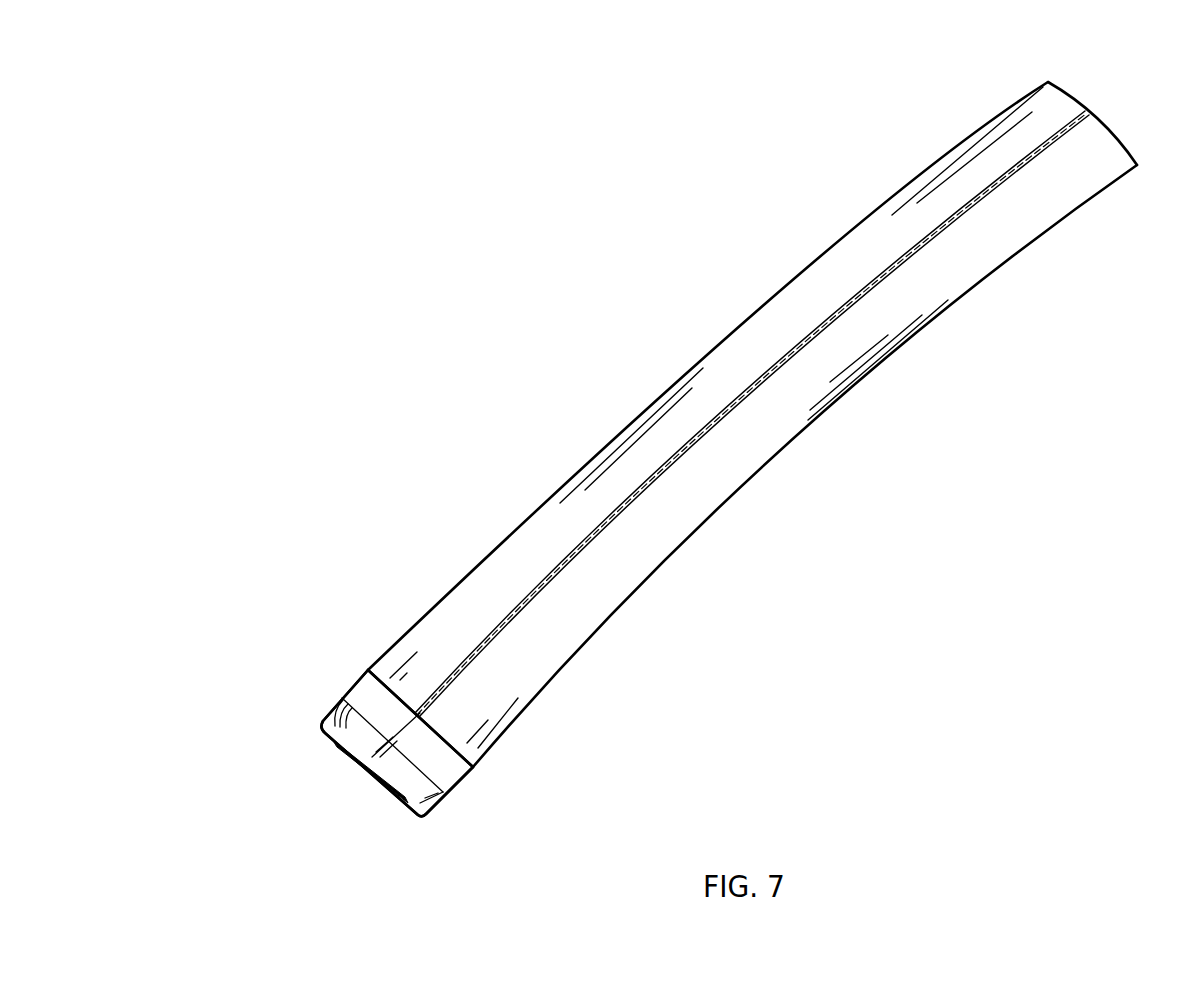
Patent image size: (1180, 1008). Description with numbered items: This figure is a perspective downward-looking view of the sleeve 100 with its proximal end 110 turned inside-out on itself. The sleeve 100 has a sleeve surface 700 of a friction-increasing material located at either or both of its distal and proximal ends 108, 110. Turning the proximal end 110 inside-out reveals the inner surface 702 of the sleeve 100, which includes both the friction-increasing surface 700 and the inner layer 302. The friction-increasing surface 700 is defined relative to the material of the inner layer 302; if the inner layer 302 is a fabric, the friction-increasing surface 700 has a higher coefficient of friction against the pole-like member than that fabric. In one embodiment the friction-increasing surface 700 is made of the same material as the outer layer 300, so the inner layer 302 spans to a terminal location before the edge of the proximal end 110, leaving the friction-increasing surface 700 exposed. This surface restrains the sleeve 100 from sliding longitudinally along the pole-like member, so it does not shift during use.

The sleeve 100 is at (1013, 237).
The distal end 108 is at (1043, 82).
The proximal end 110 is at (352, 672).
The outer layer 300 is at (533, 548).
The inner layer 302 is at (337, 727).
The friction-increasing surface 700 is at (452, 765).
The inner surface 702 is at (347, 733).